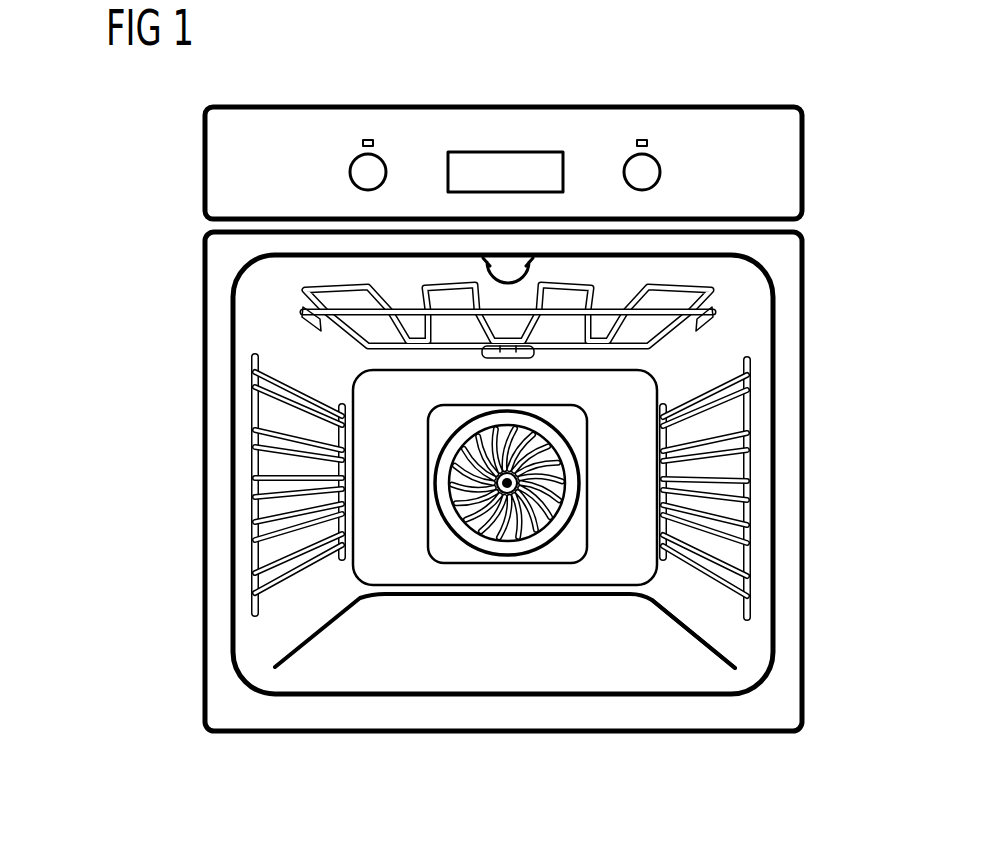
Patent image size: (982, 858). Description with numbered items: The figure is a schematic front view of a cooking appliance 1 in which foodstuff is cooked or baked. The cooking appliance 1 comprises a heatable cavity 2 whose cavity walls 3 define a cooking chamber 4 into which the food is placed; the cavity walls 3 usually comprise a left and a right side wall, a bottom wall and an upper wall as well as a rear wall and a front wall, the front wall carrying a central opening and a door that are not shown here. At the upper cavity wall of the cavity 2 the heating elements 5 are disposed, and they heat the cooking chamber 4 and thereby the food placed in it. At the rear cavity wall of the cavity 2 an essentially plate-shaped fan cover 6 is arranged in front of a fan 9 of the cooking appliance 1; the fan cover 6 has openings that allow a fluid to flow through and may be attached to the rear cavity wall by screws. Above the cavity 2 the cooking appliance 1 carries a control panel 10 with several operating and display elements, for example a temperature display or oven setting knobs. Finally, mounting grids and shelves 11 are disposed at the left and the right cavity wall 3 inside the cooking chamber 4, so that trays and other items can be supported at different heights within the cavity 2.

The cooking appliance 1 is at (112, 208).
The heatable cavity 2 is at (218, 422).
The cavity walls 3 is at (268, 635).
The cooking chamber 4 is at (740, 640).
The heating elements 5 is at (685, 290).
The fan cover 6 is at (625, 403).
The fan 9 is at (525, 532).
The control panel 10 is at (707, 148).
The mounting grids and shelves 11 is at (723, 460).